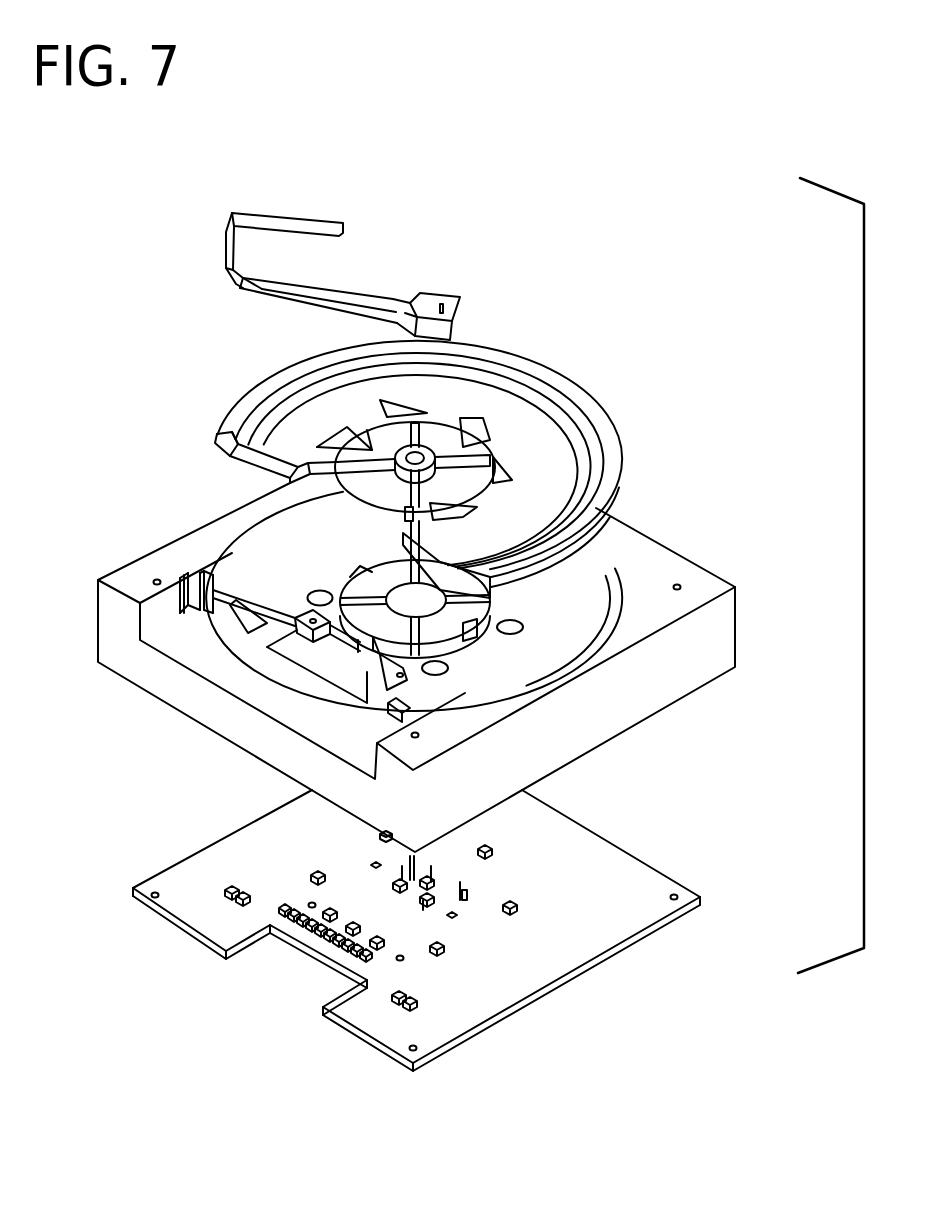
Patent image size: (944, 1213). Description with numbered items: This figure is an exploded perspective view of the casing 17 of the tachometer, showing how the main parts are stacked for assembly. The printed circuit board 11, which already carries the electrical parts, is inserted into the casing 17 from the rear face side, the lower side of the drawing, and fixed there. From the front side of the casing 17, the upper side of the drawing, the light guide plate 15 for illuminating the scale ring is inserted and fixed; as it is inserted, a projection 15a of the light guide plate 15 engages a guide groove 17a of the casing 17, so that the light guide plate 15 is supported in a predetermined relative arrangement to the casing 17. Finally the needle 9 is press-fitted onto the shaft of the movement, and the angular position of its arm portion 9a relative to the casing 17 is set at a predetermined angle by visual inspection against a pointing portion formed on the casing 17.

The needle 9 is at (223, 248).
The arm portion 9a is at (282, 300).
The light guide plate 15 is at (234, 389).
The projection 15a is at (492, 448).
The casing 17 is at (163, 542).
The guide groove 17a is at (365, 567).
The printed circuit board 11 is at (197, 857).